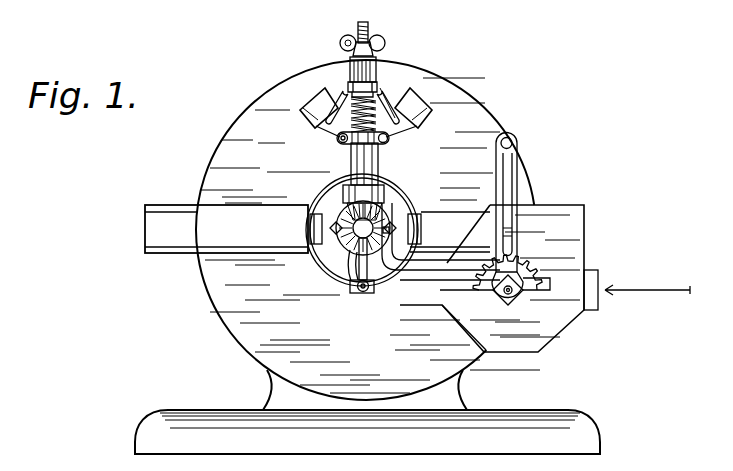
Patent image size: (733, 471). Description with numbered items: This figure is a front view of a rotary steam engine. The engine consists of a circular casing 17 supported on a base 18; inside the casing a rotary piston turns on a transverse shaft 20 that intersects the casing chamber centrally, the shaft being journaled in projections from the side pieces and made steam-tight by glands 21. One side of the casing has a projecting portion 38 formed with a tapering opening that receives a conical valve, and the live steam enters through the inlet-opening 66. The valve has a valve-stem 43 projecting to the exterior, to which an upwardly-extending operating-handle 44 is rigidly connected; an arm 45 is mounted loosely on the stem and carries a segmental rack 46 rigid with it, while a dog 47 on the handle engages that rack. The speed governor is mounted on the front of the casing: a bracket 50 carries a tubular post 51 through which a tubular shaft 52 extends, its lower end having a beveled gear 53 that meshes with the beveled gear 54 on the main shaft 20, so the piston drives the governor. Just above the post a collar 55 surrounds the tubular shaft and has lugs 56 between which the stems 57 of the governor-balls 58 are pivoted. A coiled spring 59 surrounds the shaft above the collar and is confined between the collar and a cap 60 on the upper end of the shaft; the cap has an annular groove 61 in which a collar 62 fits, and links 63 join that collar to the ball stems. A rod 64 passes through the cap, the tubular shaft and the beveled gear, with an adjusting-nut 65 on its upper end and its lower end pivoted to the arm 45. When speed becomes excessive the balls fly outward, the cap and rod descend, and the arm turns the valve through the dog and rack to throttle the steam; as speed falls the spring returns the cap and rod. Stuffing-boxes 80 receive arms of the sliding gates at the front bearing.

The circular casing 17 is at (488, 108).
The base 18 is at (592, 433).
The transverse shaft 20 is at (335, 262).
The gland 21 is at (328, 258).
The projecting portion 38 is at (568, 318).
The valve-stem 43 is at (511, 297).
The operating-handle 44 is at (517, 138).
The arm 45 is at (416, 282).
The segmental rack 46 is at (542, 264).
The dog 47 is at (506, 237).
The bracket 50 is at (386, 193).
The tubular post 51 is at (373, 162).
The tubular shaft 52 is at (338, 141).
The beveled gear 53 is at (390, 203).
The beveled gear 54 is at (362, 294).
The collar 55 is at (353, 162).
The lugs 56 is at (352, 150).
The stems 57 is at (326, 124).
The governor-balls 58 is at (305, 100).
The coiled spring 59 is at (380, 105).
The cap 60 is at (352, 62).
The annular groove 61 is at (379, 88).
The collar 62 is at (350, 87).
The links 63 is at (300, 110).
The rod 64 is at (368, 30).
The adjusting-nut 65 is at (350, 39).
The inlet-opening 66 is at (600, 292).
The stuffing-boxes 80 is at (312, 232).